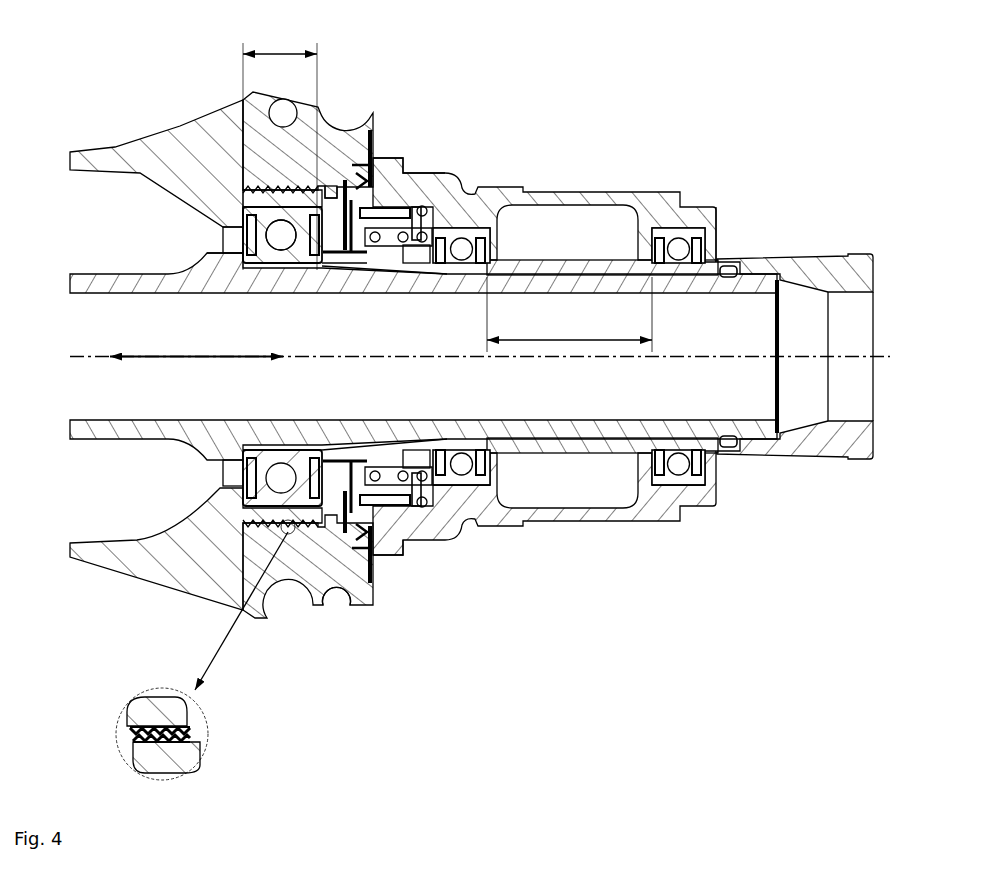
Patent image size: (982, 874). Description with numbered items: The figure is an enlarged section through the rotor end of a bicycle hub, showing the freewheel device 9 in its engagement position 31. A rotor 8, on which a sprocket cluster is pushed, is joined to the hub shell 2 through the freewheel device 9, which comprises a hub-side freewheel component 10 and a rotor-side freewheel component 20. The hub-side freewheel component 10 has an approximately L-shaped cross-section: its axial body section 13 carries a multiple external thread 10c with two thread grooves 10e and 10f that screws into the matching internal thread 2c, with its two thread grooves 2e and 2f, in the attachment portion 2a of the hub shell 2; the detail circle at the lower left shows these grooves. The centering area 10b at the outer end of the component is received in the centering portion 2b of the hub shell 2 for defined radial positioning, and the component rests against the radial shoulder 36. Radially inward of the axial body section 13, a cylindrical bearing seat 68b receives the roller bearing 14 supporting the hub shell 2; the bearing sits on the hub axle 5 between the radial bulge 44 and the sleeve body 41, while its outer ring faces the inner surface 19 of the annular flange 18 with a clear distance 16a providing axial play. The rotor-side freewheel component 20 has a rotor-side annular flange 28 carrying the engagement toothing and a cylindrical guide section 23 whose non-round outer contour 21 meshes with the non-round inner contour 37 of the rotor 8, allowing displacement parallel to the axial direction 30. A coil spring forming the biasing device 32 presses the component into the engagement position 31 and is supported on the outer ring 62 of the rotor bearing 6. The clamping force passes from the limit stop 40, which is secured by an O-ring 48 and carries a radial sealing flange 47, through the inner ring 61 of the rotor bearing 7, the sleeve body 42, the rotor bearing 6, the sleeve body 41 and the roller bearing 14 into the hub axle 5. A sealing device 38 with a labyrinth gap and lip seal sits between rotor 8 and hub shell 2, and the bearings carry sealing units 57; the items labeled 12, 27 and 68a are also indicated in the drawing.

The hub shell 2 is at (170, 770).
The attachment portion 2a is at (283, 53).
The centering portion 2b is at (327, 186).
The internal thread 2c is at (290, 600).
The thread groove 2e is at (137, 741).
The thread groove 2f is at (190, 740).
The hub axle 5 is at (172, 292).
The rotor bearing 6 is at (444, 282).
The rotor bearing 7 is at (683, 282).
The rotor 8 is at (644, 190).
The freewheel device 9 is at (390, 110).
The hub-side freewheel component 10 is at (221, 178).
The centering area 10b is at (330, 603).
The external thread 10c is at (265, 200).
The thread groove 10e is at (138, 728).
The thread groove 10f is at (190, 728).
The housing 12 is at (247, 513).
The axial body section 13 is at (243, 190).
The roller bearing 14 is at (247, 290).
The clear distance 16a is at (316, 272).
The annular flange 18 is at (331, 275).
The inner surface 19 is at (295, 274).
The rotor-side freewheel component 20 is at (388, 492).
The non-round outer contour 21 is at (405, 209).
The guide section 23 is at (392, 490).
The length 27 is at (548, 343).
The rotor-side annular flange 28 is at (366, 460).
The axial direction 30 is at (185, 358).
The engagement position 31 is at (432, 562).
The biasing device 32 is at (377, 267).
The radial shoulder 36 is at (243, 213).
The non-round inner contour 37 is at (387, 208).
The sealing device 38 is at (365, 603).
The limit stop 40 is at (823, 270).
The sleeve body 41 is at (407, 270).
The sleeve body 42 is at (568, 270).
The radial bulge 44 is at (228, 262).
The sealing flange 47 is at (722, 242).
The O-ring 48 is at (728, 278).
The sealing unit 57 is at (300, 446).
The inner ring 61 is at (457, 442).
The outer ring 62 is at (477, 478).
The groove 68a is at (275, 440).
The cylindrical bearing seat 68b is at (238, 186).